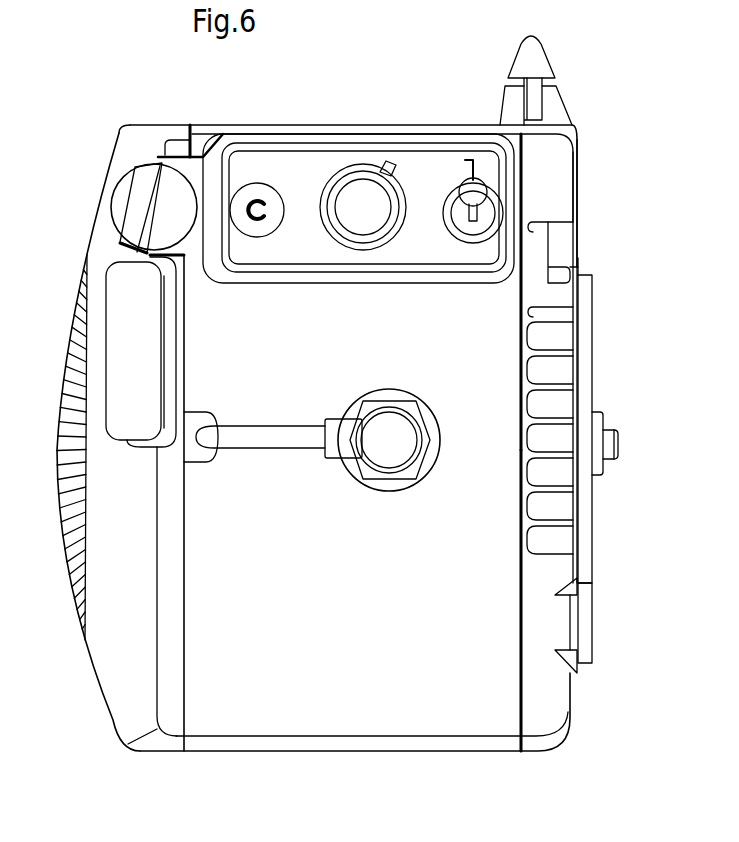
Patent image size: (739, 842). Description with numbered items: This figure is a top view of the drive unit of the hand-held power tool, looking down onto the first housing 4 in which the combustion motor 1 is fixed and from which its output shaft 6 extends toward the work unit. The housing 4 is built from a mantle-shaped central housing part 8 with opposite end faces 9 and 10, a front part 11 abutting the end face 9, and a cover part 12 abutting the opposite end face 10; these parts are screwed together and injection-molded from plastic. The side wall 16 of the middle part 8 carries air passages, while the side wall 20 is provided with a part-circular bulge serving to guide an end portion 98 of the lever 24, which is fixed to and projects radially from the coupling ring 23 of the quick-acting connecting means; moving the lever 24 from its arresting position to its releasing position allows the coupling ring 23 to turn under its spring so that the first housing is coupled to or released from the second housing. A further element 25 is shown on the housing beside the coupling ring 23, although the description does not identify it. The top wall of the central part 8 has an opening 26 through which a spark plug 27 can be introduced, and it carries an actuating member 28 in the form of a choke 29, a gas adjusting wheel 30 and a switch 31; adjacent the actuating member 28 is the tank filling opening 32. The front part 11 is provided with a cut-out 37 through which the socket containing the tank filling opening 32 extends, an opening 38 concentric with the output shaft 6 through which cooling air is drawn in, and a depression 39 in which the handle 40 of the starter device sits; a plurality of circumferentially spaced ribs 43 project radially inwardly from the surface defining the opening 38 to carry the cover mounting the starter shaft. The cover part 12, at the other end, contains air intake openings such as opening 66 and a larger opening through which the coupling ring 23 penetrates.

The combustion motor 1 is at (413, 698).
The first housing 4 is at (498, 347).
The output shaft 6 is at (612, 452).
The central housing part 8 is at (302, 712).
The end face 9 is at (184, 640).
The end face 10 is at (518, 693).
The front part 11 is at (100, 628).
The cover part 12 is at (545, 622).
The side wall 16 is at (342, 757).
The side wall 20 is at (303, 124).
The coupling ring 23 is at (585, 383).
The lever 24 is at (528, 108).
The ledge 25 is at (488, 310).
The opening 26 is at (380, 393).
The spark plug 27 is at (400, 437).
The actuating member 28 is at (401, 168).
The choke 29 is at (250, 185).
The gas adjusting wheel 30 is at (352, 170).
The switch 31 is at (470, 193).
The tank filling opening 32 is at (183, 176).
The cut-out 37 is at (160, 160).
The opening 38 is at (77, 257).
The depression 39 is at (172, 347).
The handle 40 is at (117, 310).
The ribs 43 is at (60, 422).
The air intake opening 66 is at (557, 543).
The end portion 98 is at (531, 63).